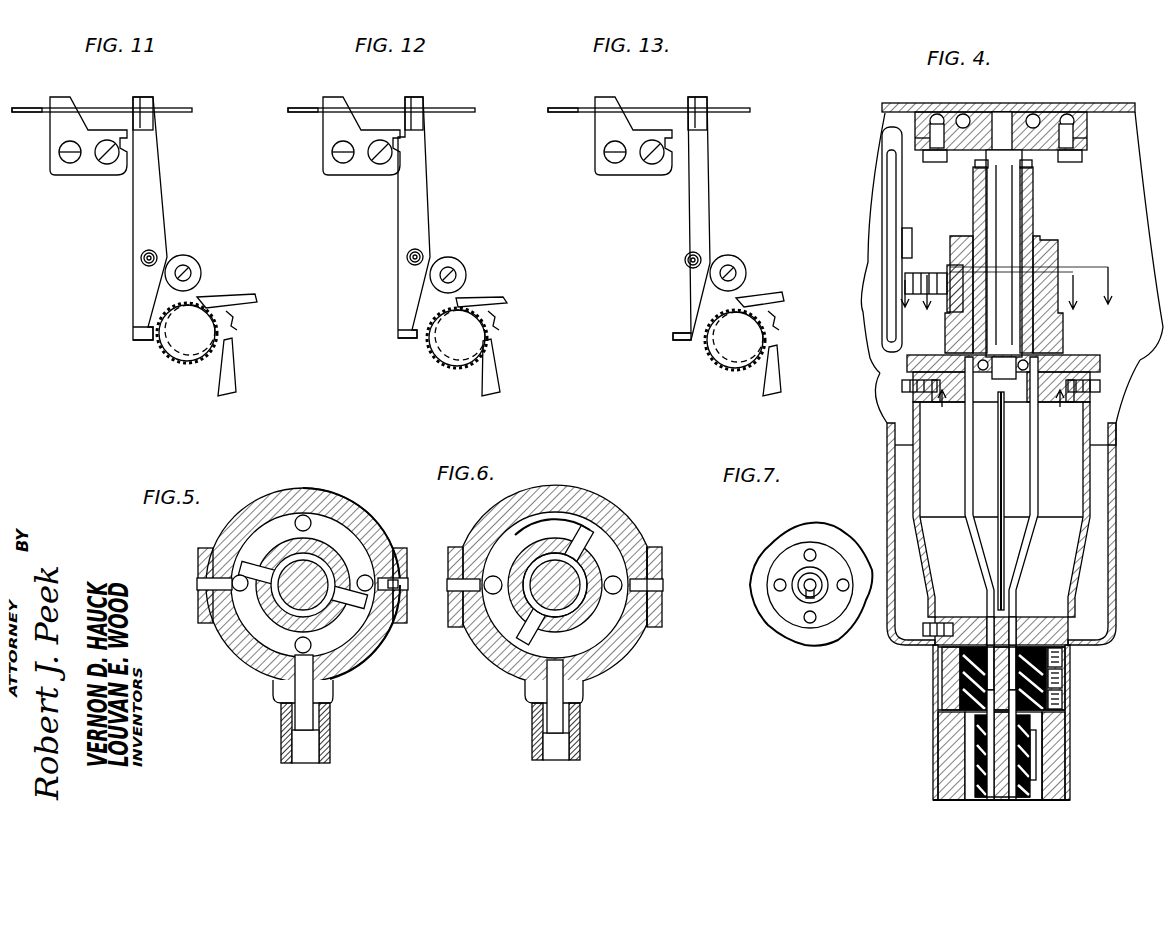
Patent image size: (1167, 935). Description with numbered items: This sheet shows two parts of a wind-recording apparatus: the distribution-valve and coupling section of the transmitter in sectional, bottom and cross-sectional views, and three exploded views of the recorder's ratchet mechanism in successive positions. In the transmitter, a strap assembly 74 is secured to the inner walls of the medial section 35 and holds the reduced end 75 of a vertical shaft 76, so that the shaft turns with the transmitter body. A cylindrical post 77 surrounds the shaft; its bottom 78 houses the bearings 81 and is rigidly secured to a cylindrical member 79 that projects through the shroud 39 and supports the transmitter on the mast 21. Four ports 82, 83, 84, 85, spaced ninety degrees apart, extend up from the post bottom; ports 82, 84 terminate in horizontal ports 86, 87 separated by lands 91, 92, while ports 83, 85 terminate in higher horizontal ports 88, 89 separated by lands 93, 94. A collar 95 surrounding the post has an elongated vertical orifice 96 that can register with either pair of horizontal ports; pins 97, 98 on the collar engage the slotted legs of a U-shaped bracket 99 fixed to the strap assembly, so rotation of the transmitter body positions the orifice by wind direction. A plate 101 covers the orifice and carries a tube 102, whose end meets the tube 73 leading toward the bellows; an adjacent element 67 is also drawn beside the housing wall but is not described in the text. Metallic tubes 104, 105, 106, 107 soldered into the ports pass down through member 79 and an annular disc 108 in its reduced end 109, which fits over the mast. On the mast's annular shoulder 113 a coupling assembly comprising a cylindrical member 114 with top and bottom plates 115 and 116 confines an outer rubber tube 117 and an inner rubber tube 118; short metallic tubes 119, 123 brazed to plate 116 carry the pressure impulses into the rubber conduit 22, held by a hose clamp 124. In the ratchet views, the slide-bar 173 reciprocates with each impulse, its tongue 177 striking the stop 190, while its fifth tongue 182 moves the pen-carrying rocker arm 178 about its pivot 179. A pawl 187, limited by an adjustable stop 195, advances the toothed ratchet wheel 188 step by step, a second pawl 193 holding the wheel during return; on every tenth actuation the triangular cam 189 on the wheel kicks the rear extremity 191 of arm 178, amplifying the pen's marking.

In FIG. 4, the mast 21 is at (1059, 754).
In FIG. 4, the rubber conduit 22 is at (1029, 780).
In FIG. 4, the medial section 35 is at (958, 105).
In FIG. 4, the shroud 39 is at (1116, 510).
In FIG. 4, the bracket 67 is at (903, 177).
In FIG. 4, the tube 73 is at (900, 283).
In FIG. 4, the strap assembly 74 is at (917, 122).
In FIG. 4, the reduced end 75 is at (1002, 137).
In FIG. 4, the vertical shaft 76 is at (1002, 175).
In FIG. 5, the vertical shaft 76 is at (287, 567).
In FIG. 6, the vertical shaft 76 is at (563, 573).
In FIG. 4, the cylindrical post 77 is at (1005, 260).
In FIG. 5, the cylindrical post 77 is at (212, 552).
In FIG. 6, the cylindrical post 77 is at (603, 680).
In FIG. 4, the bottom of post 78 is at (1102, 357).
In FIG. 4, the cylindrical member 79 is at (1112, 456).
In FIG. 4, the bearings 81 is at (992, 400).
In FIG. 4, the port 82 is at (958, 398).
In FIG. 5, the port 82 is at (293, 647).
In FIG. 4, the port 83 is at (1010, 298).
In FIG. 5, the port 83 is at (237, 587).
In FIG. 6, the port 83 is at (497, 580).
In FIG. 4, the port 84 is at (1048, 398).
In FIG. 5, the port 84 is at (322, 510).
In FIG. 5, the port 85 is at (410, 590).
In FIG. 6, the port 85 is at (618, 593).
In FIG. 5, the horizontal port 86 is at (260, 627).
In FIG. 5, the horizontal port 87 is at (343, 540).
In FIG. 4, the horizontal port 88 is at (1042, 240).
In FIG. 6, the horizontal port 88 is at (517, 547).
In FIG. 6, the horizontal port 89 is at (625, 673).
In FIG. 5, the land 91 is at (258, 613).
In FIG. 5, the land 92 is at (373, 543).
In FIG. 6, the land 93 is at (577, 517).
In FIG. 6, the land 94 is at (530, 647).
In FIG. 4, the collar 95 is at (1058, 248).
In FIG. 5, the collar 95 is at (370, 663).
In FIG. 6, the collar 95 is at (563, 525).
In FIG. 4, the elongated vertical orifice 96 is at (955, 267).
In FIG. 5, the elongated vertical orifice 96 is at (333, 688).
In FIG. 6, the elongated vertical orifice 96 is at (583, 700).
In FIG. 5, the pin 97 is at (197, 590).
In FIG. 5, the pin 98 is at (407, 583).
In FIG. 6, the pin 98 is at (660, 583).
In FIG. 4, the U-shaped bracket 99 is at (977, 160).
In FIG. 5, the U-shaped bracket 99 is at (403, 627).
In FIG. 6, the U-shaped bracket 99 is at (648, 620).
In FIG. 5, the plate 101 is at (330, 703).
In FIG. 6, the plate 101 is at (530, 697).
In FIG. 5, the tube 102 is at (328, 742).
In FIG. 6, the tube 102 is at (533, 742).
In FIG. 4, the metallic tube 104 is at (962, 478).
In FIG. 7, the metallic tube 104 is at (778, 588).
In FIG. 4, the metallic tube 105 is at (1006, 469).
In FIG. 7, the metallic tube 105 is at (810, 550).
In FIG. 4, the metallic tube 106 is at (1040, 500).
In FIG. 7, the metallic tube 106 is at (843, 590).
In FIG. 7, the metallic tube 107 is at (810, 617).
In FIG. 4, the annular disc 108 is at (980, 614).
In FIG. 4, the reduced end 109 is at (1067, 668).
In FIG. 4, the annular shoulder 113 is at (932, 724).
In FIG. 4, the cylindrical member 114 is at (955, 687).
In FIG. 4, the top circular plate 115 is at (943, 660).
In FIG. 4, the bottom circular plate 116 is at (943, 713).
In FIG. 4, the outer rubber tube 117 is at (1067, 687).
In FIG. 4, the inner rubber tube 118 is at (1067, 704).
In FIG. 4, the short metallic tube 119 is at (971, 758).
In FIG. 4, the short metallic tube 123 is at (990, 782).
In FIG. 4, the hose clamp 124 is at (1029, 750).
In FIG. 11, the slide-bar 173 is at (173, 108).
In FIG. 12, the slide-bar 173 is at (387, 91).
In FIG. 13, the slide-bar 173 is at (654, 91).
In FIG. 11, the tongue 177 is at (14, 108).
In FIG. 12, the tongue 177 is at (300, 91).
In FIG. 13, the tongue 177 is at (569, 91).
In FIG. 11, the rocker arm 178 is at (150, 160).
In FIG. 12, the rocker arm 178 is at (432, 217).
In FIG. 13, the rocker arm 178 is at (709, 218).
In FIG. 11, the pivot arrangement 179 is at (142, 255).
In FIG. 12, the pivot arrangement 179 is at (377, 240).
In FIG. 13, the pivot arrangement 179 is at (663, 242).
In FIG. 11, the fifth tongue 182 is at (133, 104).
In FIG. 12, the fifth tongue 182 is at (418, 100).
In FIG. 13, the fifth tongue 182 is at (697, 100).
In FIG. 11, the pawl 187 is at (232, 290).
In FIG. 12, the pawl 187 is at (501, 292).
In FIG. 13, the pawl 187 is at (791, 293).
In FIG. 11, the toothed ratchet wheel 188 is at (234, 329).
In FIG. 12, the toothed ratchet wheel 188 is at (516, 326).
In FIG. 13, the toothed ratchet wheel 188 is at (802, 330).
In FIG. 11, the triangular cam 189 is at (160, 330).
In FIG. 12, the triangular cam 189 is at (448, 345).
In FIG. 13, the triangular cam 189 is at (726, 349).
In FIG. 11, the stop 190 is at (63, 102).
In FIG. 12, the stop 190 is at (361, 123).
In FIG. 13, the stop 190 is at (633, 123).
In FIG. 11, the rear extremity 191 is at (135, 336).
In FIG. 12, the rear extremity 191 is at (374, 344).
In FIG. 13, the rear extremity 191 is at (657, 345).
In FIG. 11, the second pawl 193 is at (236, 370).
In FIG. 12, the second pawl 193 is at (511, 367).
In FIG. 13, the second pawl 193 is at (800, 370).
In FIG. 11, the adjustable stop 195 is at (178, 258).
In FIG. 12, the adjustable stop 195 is at (454, 254).
In FIG. 13, the adjustable stop 195 is at (738, 253).